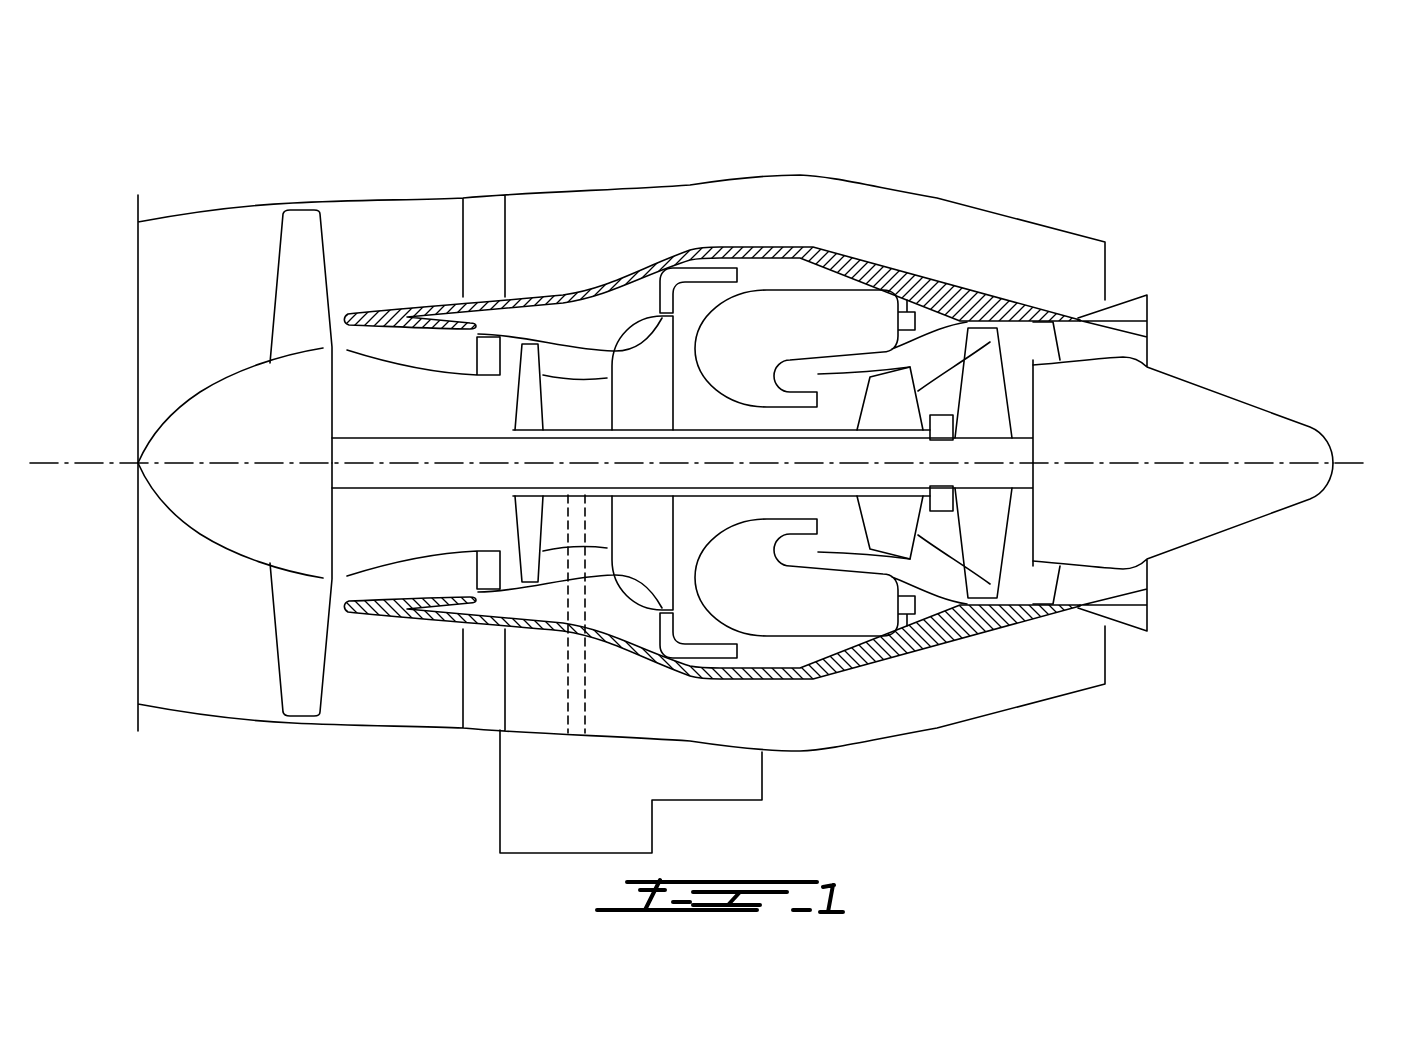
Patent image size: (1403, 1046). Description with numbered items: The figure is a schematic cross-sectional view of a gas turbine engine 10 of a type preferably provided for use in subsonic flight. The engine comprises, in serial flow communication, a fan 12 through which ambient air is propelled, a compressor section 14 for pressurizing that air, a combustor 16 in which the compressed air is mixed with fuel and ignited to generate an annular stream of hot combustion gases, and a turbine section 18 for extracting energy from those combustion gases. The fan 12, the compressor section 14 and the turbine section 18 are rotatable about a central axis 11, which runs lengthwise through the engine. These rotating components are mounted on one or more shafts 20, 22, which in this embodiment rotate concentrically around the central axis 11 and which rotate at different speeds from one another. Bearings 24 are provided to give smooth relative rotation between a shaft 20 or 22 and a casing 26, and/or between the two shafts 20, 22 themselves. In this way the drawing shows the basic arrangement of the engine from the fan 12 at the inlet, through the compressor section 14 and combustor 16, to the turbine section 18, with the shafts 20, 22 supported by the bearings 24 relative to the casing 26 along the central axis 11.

The gas turbine engine 10 is at (1088, 142).
The central axis 11 is at (1374, 463).
The fan 12 is at (303, 632).
The compressor section 14 is at (566, 355).
The combustor 16 is at (798, 312).
The turbine section 18 is at (938, 533).
The shaft 20 is at (384, 488).
The shaft 22 is at (698, 495).
The bearings 24 is at (938, 417).
The casing 26 is at (880, 268).